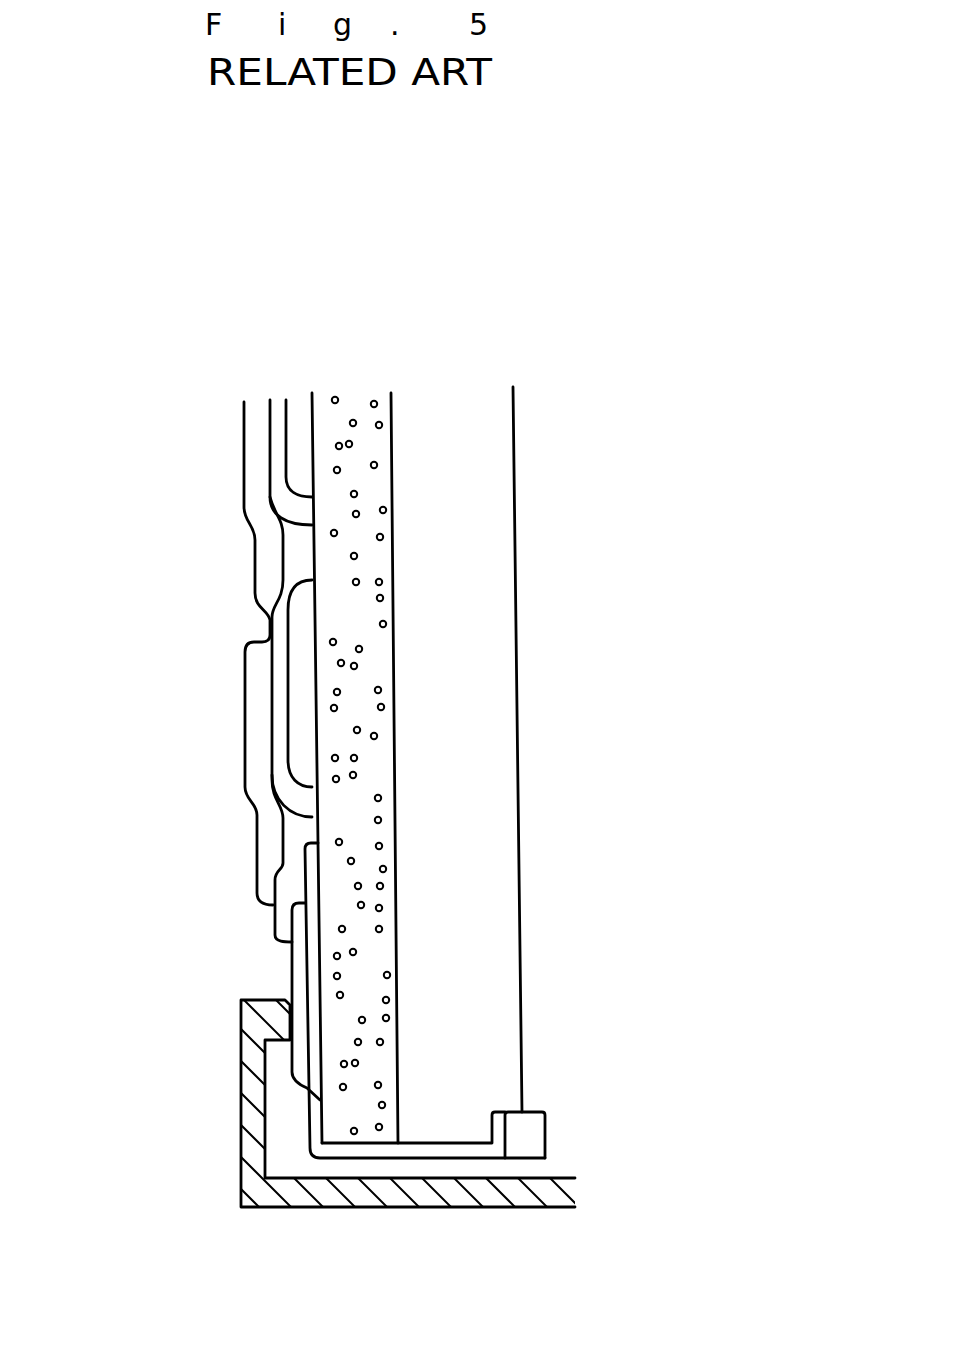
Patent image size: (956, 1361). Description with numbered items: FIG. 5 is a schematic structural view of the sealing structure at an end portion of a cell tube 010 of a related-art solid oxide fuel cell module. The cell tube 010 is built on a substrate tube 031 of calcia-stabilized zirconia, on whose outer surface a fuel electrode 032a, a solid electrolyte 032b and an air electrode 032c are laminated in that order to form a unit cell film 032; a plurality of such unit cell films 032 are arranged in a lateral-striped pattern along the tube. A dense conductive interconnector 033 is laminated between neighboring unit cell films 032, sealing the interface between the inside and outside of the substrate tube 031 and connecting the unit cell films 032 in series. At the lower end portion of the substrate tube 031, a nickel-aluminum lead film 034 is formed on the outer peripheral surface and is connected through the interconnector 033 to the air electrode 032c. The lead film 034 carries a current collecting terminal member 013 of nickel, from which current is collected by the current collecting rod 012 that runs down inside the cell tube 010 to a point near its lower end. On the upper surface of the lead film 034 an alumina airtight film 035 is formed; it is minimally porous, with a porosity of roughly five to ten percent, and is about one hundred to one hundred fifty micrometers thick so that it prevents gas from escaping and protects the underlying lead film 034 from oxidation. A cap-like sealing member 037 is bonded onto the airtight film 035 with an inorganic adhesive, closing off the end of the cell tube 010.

The cell tube 010 is at (246, 353).
The current collecting rod 012 is at (513, 437).
The current collecting terminal member 013 is at (443, 1150).
The substrate tube 031 is at (377, 840).
The unit cell film 032 is at (564, 608).
The fuel electrode 032a is at (305, 743).
The solid electrolyte 032b is at (280, 692).
The air electrode 032c is at (258, 662).
The interconnector 033 is at (300, 555).
The lead film 034 is at (313, 975).
The airtight film 035 is at (292, 1060).
The cap-like sealing member 037 is at (535, 1198).